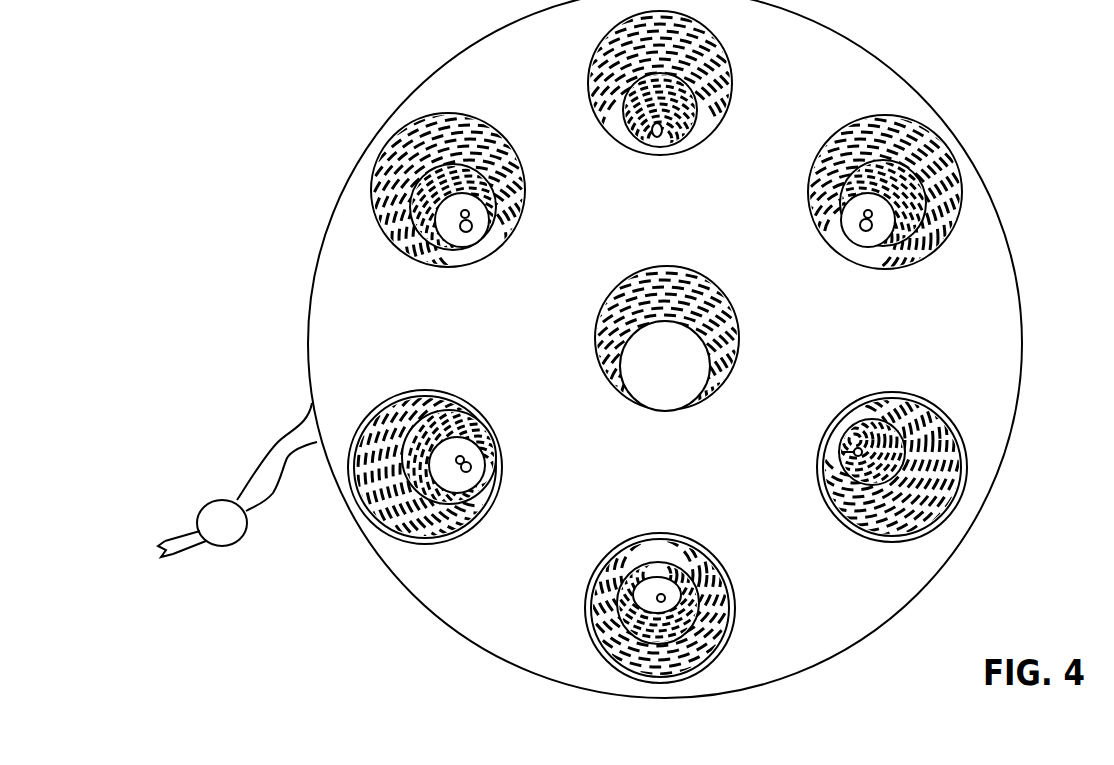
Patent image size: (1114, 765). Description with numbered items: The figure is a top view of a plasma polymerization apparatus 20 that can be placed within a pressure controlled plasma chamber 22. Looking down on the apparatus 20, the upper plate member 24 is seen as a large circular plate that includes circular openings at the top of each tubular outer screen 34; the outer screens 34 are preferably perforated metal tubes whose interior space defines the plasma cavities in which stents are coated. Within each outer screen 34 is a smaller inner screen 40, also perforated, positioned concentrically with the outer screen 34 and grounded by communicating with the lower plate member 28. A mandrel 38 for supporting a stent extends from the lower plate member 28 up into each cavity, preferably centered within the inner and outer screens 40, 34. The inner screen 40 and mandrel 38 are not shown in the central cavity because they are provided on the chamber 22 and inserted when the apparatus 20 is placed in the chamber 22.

The plasma polymerization apparatus 20 is at (673, 382).
The pressure controlled plasma chamber 22 is at (293, 660).
The upper plate member 24 is at (771, 572).
The lower plate member 28 is at (455, 420).
The outer screens 34 is at (410, 155).
The mandrels 38 is at (462, 217).
The inner screens 40 is at (410, 200).